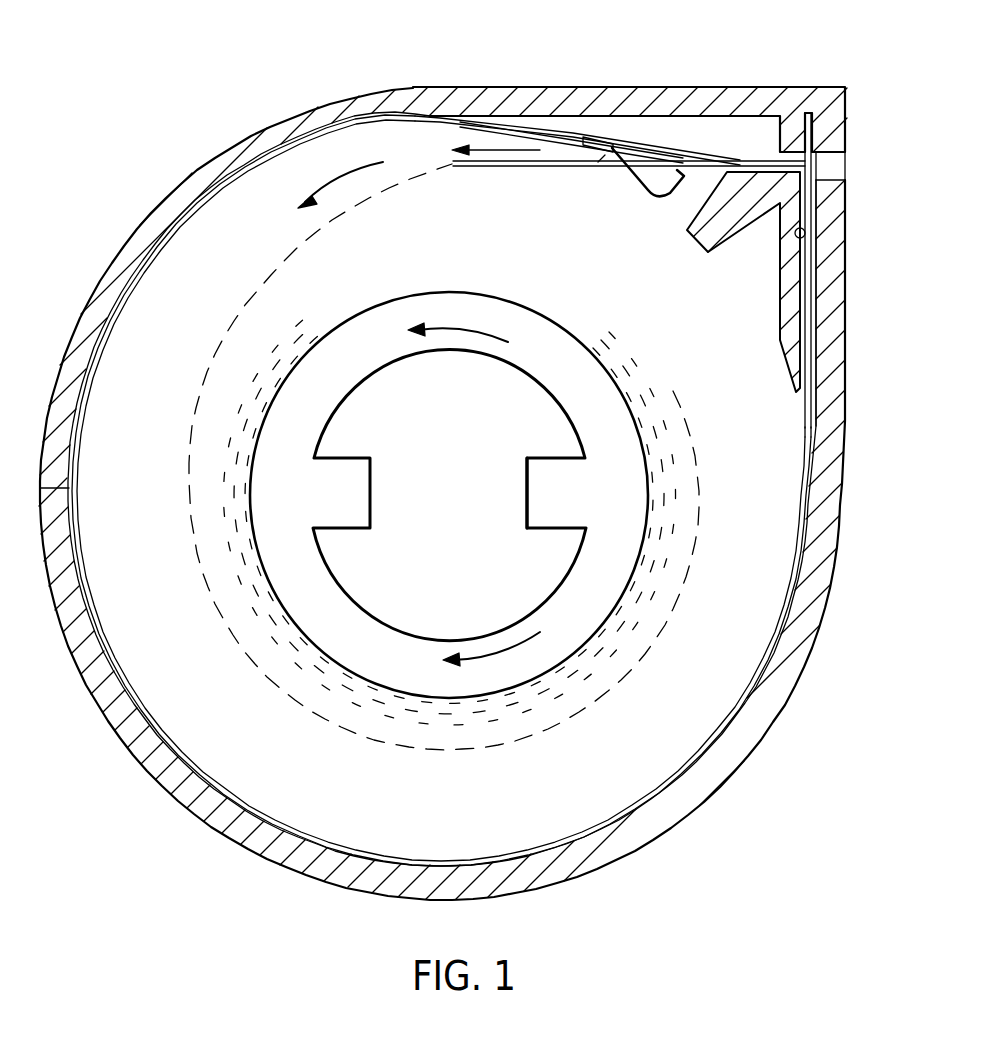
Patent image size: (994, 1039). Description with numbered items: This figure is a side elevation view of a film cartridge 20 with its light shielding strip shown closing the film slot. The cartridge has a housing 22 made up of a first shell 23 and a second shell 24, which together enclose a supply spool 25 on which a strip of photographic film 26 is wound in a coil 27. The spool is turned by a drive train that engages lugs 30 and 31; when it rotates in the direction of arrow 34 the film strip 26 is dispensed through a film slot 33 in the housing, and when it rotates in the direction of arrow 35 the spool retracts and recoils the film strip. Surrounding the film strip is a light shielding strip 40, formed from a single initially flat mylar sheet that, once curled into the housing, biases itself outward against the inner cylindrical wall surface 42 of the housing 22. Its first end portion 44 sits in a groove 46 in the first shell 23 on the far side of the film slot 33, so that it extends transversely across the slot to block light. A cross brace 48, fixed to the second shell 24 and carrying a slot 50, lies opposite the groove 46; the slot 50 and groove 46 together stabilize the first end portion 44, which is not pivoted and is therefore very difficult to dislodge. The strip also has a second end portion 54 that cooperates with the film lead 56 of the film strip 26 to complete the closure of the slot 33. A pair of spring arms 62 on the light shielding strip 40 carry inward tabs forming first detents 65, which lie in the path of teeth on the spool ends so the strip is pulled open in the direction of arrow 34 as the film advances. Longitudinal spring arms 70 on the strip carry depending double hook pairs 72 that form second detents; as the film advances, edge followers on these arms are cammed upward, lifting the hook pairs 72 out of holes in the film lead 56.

The film cartridge 20 is at (433, 86).
The housing 22 is at (133, 222).
The first shell 23 is at (258, 135).
The second shell 24 is at (815, 665).
The supply spool 25 is at (590, 648).
The strip of photographic film 26 is at (500, 170).
The coil 27 is at (520, 742).
The lug 30 is at (372, 474).
The lug 31 is at (525, 474).
The film slot 33 is at (840, 162).
The arrow 34 is at (497, 645).
The arrow 35 is at (448, 328).
The light shielding strip 40 is at (790, 655).
The inner cylindrical wall surface 42 is at (130, 298).
The first end portion 44 is at (818, 127).
The groove 46 is at (795, 116).
The cross brace 48 is at (782, 310).
The slot 50 is at (812, 282).
The second end portion 54 is at (706, 168).
The film lead 56 is at (746, 160).
The spring arms 62 is at (805, 238).
The first detents 65 is at (350, 178).
The longitudinal spring arms 70 is at (660, 200).
The double hook pairs 72 is at (642, 180).